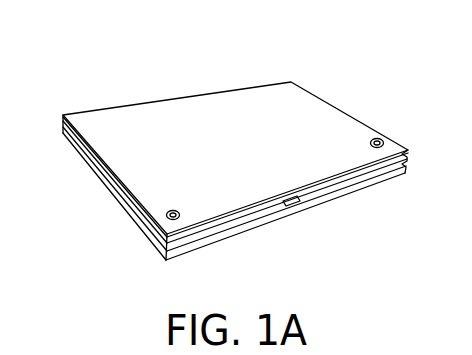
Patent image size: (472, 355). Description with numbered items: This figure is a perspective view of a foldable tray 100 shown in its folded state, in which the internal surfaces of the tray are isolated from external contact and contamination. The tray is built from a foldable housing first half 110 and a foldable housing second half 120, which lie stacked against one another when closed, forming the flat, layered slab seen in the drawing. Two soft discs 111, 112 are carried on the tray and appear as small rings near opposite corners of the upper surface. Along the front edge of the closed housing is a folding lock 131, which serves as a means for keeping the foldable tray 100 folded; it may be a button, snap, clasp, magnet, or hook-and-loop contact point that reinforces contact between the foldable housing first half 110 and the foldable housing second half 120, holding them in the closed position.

The foldable tray 100 is at (133, 64).
The foldable housing first half 110 is at (92, 163).
The foldable housing second half 120 is at (100, 183).
The soft disc 111 is at (175, 221).
The soft disc 112 is at (378, 149).
The folding lock 131 is at (293, 206).